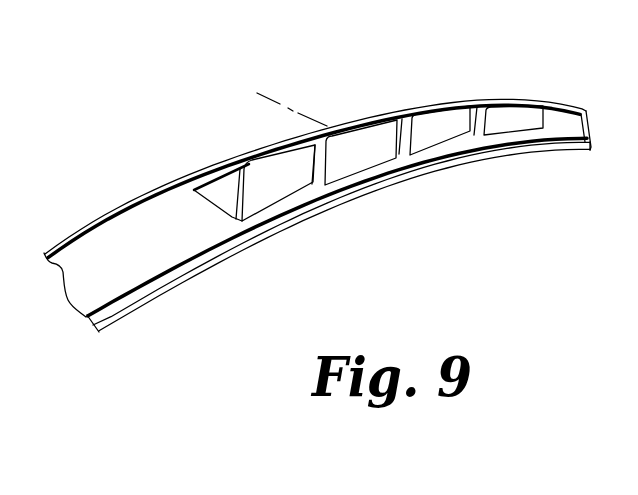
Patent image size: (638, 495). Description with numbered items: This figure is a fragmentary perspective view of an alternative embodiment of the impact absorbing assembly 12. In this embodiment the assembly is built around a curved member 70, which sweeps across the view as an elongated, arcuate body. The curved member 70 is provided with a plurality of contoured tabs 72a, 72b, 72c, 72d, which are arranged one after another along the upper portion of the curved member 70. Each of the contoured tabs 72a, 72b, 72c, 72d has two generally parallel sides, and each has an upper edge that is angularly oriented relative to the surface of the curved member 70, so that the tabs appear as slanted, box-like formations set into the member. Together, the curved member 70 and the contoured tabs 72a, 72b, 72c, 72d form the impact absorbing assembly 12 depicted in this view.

The impact absorbing assembly 12 is at (166, 184).
The curved member 70 is at (148, 260).
The contoured tab 72a is at (262, 181).
The contoured tab 72b is at (358, 138).
The contoured tab 72c is at (433, 128).
The contoured tab 72d is at (518, 118).